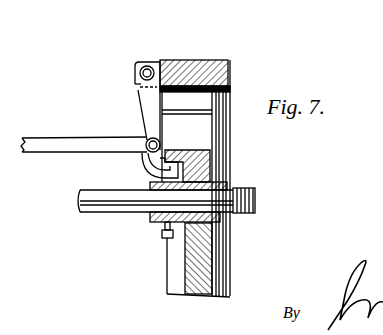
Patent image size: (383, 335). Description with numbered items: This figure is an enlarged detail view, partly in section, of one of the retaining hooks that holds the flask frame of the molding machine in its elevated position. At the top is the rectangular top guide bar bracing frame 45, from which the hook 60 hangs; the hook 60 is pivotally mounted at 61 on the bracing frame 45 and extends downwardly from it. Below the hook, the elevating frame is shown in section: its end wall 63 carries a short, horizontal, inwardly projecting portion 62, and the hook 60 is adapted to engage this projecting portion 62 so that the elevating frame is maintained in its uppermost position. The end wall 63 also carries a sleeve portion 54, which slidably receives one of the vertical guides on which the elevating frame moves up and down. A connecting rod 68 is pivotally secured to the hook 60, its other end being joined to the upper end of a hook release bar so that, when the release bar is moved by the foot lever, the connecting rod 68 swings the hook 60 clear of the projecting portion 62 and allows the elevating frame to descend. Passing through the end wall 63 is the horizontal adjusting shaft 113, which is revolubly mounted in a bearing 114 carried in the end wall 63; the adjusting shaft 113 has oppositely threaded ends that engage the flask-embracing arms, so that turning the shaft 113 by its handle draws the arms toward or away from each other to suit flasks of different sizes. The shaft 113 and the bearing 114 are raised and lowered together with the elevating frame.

The top guide bar bracing frame 45 is at (206, 61).
The sleeve portion 54 is at (218, 268).
The hook 60 is at (143, 98).
The pivot 61 is at (140, 70).
The inwardly projecting portion 62 is at (223, 158).
The end wall 63 is at (200, 255).
The connecting rod 68 is at (52, 143).
The adjusting shaft 113 is at (256, 198).
The bearing 114 is at (225, 178).